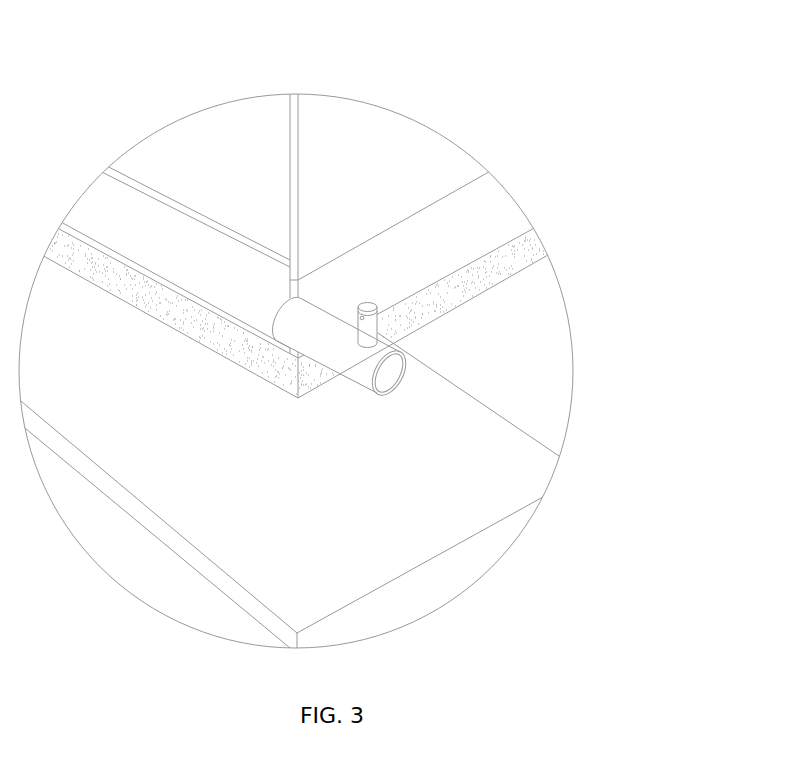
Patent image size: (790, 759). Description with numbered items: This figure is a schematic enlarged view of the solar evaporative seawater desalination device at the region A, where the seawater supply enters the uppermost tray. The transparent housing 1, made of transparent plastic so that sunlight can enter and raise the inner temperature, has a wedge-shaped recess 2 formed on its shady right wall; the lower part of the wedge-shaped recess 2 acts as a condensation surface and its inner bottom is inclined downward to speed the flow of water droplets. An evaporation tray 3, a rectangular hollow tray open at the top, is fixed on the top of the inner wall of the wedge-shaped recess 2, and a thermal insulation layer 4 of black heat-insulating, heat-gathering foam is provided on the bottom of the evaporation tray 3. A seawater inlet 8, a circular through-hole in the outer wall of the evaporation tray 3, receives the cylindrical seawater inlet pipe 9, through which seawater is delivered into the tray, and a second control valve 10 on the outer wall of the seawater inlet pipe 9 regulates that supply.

The transparent housing 1 is at (403, 198).
The wedge-shaped recess 2 is at (360, 500).
The evaporation tray 3 is at (430, 247).
The thermal insulation layer 4 is at (452, 292).
The seawater inlet 8 is at (308, 302).
The seawater inlet pipe 9 is at (388, 373).
The second control valve 10 is at (370, 330).
The enlarged portion A is at (410, 622).